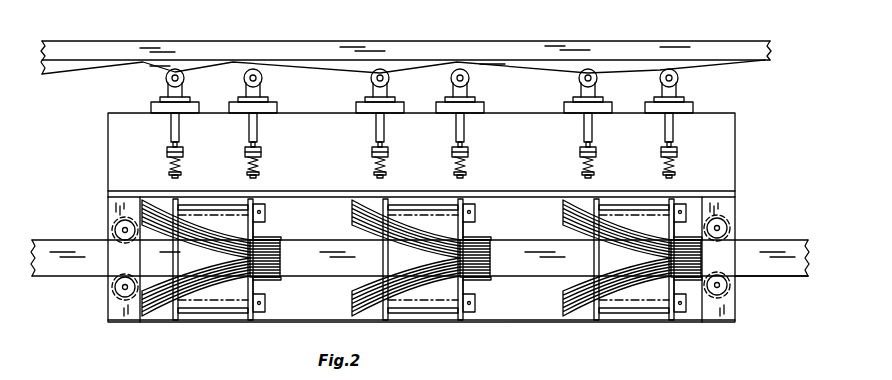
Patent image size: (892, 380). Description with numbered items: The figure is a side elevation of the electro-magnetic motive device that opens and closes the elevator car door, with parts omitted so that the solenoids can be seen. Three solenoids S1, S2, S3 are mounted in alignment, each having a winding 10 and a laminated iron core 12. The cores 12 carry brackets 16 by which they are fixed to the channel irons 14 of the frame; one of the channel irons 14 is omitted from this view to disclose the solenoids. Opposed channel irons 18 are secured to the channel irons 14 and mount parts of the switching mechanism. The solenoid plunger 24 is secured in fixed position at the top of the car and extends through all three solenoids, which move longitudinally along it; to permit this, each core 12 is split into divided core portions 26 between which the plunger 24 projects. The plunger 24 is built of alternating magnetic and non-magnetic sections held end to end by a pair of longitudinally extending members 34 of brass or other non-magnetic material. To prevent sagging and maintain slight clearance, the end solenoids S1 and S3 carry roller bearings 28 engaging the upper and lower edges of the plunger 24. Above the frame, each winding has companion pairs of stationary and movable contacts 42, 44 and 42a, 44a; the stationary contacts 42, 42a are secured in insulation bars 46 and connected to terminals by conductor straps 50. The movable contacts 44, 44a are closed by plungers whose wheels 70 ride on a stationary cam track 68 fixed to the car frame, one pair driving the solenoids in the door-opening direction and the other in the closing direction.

The cam track 68 is at (706, 62).
The wheel 70 is at (165, 78).
The conductor strap 50 is at (159, 99).
The bar of insulation material 46 is at (152, 107).
The stationary contact member 42 is at (181, 132).
The stationary contact member 42a is at (259, 135).
The movable contact member 44 is at (185, 151).
The movable contact member 44a is at (263, 151).
The channel iron 18 is at (727, 170).
The bracket 16 is at (267, 215).
The divided core portion 26 is at (160, 228).
The laminated iron core 12 is at (274, 279).
The winding 10 is at (236, 313).
The channel iron 14 is at (527, 308).
The solenoid S1 is at (215, 316).
The solenoid S2 is at (434, 312).
The solenoid S3 is at (634, 312).
The roller bearing 28 is at (118, 300).
The longitudinally extending member 34 is at (759, 247).
The solenoid plunger 24 is at (771, 280).